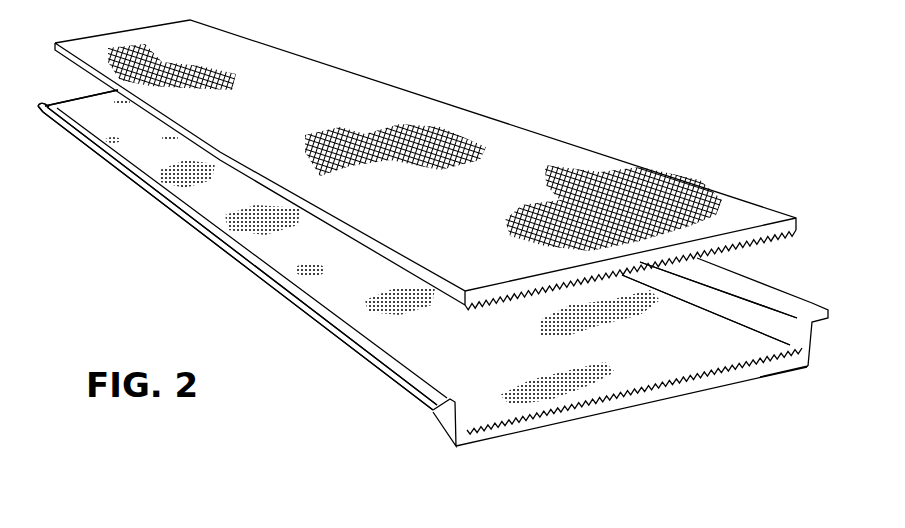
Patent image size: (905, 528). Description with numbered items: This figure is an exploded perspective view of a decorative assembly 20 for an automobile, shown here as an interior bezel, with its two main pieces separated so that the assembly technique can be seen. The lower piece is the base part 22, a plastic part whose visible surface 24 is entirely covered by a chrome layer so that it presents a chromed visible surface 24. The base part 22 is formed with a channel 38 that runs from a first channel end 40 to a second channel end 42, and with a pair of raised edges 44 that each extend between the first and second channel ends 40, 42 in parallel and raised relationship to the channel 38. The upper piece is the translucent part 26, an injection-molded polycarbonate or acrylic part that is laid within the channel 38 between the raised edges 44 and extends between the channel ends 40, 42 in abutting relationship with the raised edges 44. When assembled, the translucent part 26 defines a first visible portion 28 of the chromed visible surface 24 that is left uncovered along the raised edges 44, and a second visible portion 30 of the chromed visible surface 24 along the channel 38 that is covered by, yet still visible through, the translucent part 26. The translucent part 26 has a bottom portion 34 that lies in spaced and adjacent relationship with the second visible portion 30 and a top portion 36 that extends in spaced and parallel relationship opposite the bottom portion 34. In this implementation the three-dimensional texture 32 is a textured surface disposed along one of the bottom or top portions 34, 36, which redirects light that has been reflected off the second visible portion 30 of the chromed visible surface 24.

The decorative assembly 20 is at (654, 148).
The base part 22 is at (429, 422).
The visible surface 24 is at (472, 418).
The translucent part 26 is at (408, 90).
The first visible portion 28 is at (752, 292).
The second visible portion 30 is at (737, 362).
The three-dimensional texture 32 is at (740, 262).
The bottom portion 34 is at (553, 292).
The top portion 36 is at (525, 140).
The channel 38 is at (675, 382).
The first channel end 40 is at (760, 370).
The second channel end 42 is at (72, 103).
The raised edges 44 is at (720, 310).